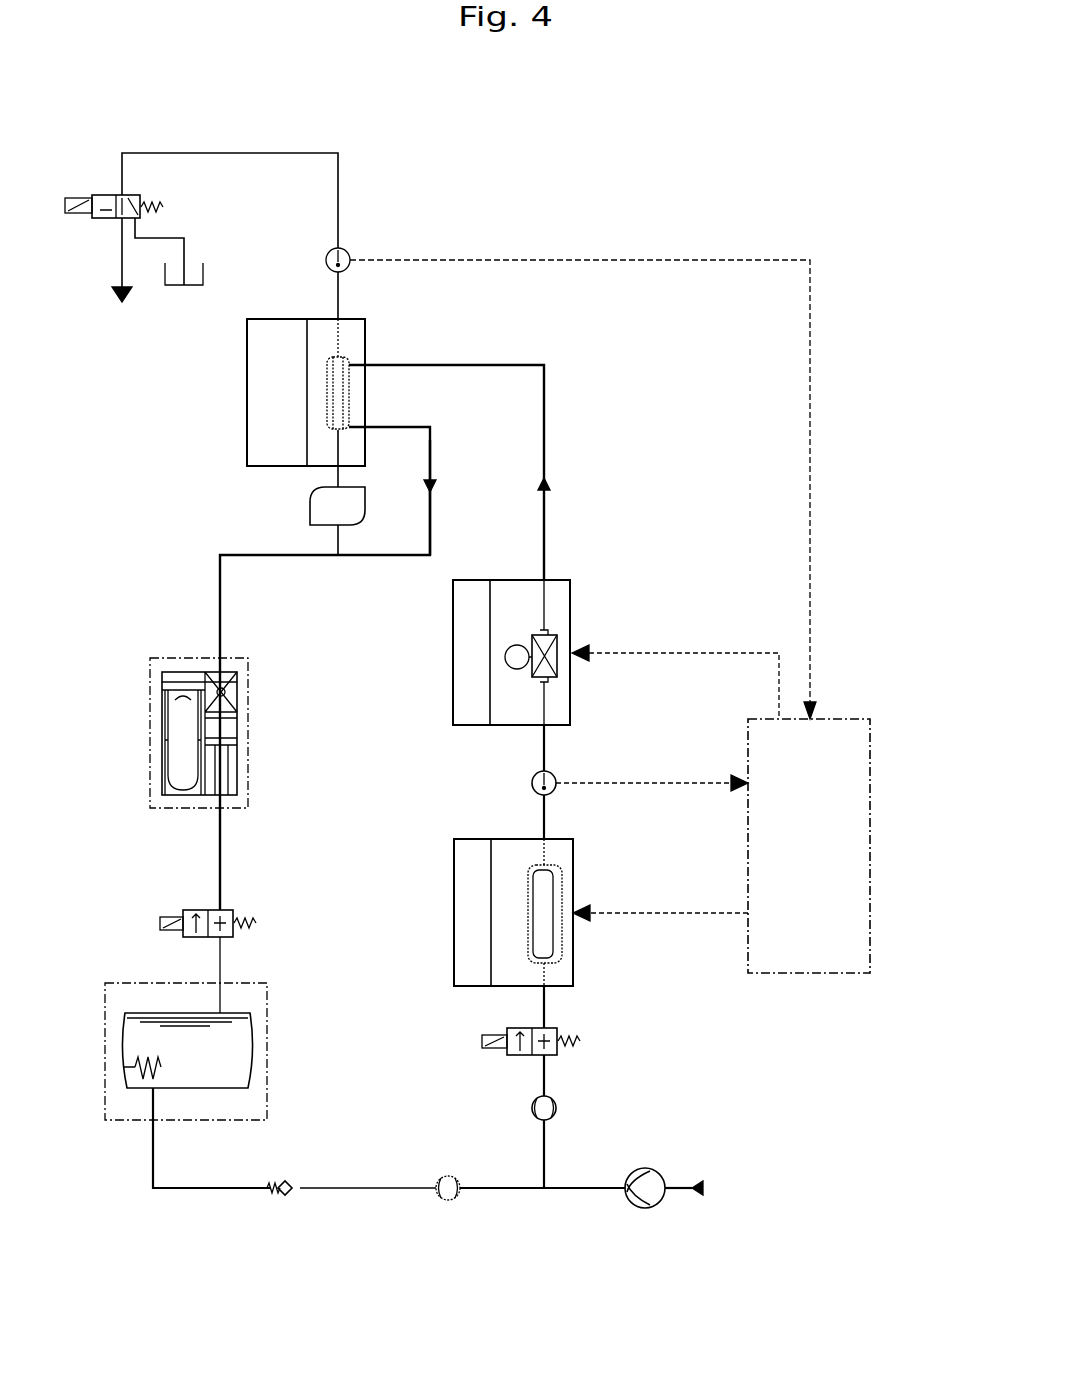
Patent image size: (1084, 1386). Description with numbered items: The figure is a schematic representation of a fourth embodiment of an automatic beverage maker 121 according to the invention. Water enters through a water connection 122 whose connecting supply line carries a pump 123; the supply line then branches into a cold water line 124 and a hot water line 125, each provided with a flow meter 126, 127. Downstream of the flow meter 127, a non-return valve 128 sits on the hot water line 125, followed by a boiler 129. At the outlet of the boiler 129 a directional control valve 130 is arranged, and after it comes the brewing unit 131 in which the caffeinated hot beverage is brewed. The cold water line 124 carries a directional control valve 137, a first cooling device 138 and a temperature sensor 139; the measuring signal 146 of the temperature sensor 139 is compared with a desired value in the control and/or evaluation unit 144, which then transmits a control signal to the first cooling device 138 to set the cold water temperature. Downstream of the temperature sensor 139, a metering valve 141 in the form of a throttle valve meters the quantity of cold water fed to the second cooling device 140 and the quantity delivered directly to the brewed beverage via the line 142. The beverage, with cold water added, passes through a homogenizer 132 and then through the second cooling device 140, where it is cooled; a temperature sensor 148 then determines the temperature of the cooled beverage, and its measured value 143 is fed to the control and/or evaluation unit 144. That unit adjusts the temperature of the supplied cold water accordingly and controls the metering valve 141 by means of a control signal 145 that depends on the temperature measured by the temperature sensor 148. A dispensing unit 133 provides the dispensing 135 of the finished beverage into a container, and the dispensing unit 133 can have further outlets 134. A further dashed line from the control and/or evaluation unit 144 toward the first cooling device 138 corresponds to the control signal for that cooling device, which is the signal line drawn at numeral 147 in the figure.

The automatic beverage maker 121 is at (838, 486).
The water connection 122 is at (697, 1180).
The pump 123 is at (650, 1207).
The cold water line 124 is at (547, 1156).
The hot water line 125 is at (495, 1188).
The flow meter 126 is at (552, 1098).
The flow meter 127 is at (442, 1200).
The non-return valve 128 is at (288, 1182).
The boiler 129 is at (267, 1050).
The directional control valve 130 is at (233, 912).
The brewing unit 131 is at (248, 707).
The homogenizer 132 is at (310, 503).
The dispensing unit 133 is at (107, 193).
The further outlets 134 is at (205, 272).
The dispensing 135 is at (123, 300).
The directional control valve 137 is at (557, 1030).
The first cooling device 138 is at (573, 878).
The temperature sensor 139 is at (552, 773).
The second cooling device 140 is at (365, 452).
The metering valve 141 is at (572, 603).
The line 142 is at (432, 532).
The measured value 143 is at (815, 333).
The control and/or evaluation unit 144 is at (870, 828).
The control signal 145 is at (710, 653).
The measuring signal 146 is at (653, 782).
The control signal line 147 is at (698, 915).
The temperature sensor 148 is at (345, 251).